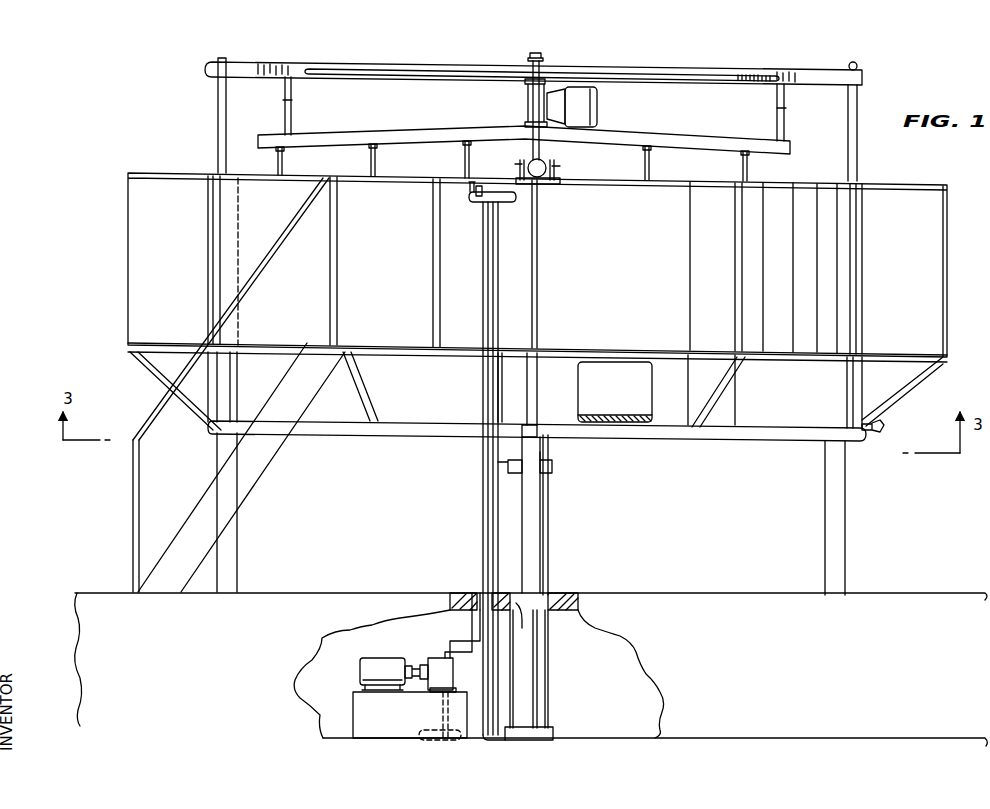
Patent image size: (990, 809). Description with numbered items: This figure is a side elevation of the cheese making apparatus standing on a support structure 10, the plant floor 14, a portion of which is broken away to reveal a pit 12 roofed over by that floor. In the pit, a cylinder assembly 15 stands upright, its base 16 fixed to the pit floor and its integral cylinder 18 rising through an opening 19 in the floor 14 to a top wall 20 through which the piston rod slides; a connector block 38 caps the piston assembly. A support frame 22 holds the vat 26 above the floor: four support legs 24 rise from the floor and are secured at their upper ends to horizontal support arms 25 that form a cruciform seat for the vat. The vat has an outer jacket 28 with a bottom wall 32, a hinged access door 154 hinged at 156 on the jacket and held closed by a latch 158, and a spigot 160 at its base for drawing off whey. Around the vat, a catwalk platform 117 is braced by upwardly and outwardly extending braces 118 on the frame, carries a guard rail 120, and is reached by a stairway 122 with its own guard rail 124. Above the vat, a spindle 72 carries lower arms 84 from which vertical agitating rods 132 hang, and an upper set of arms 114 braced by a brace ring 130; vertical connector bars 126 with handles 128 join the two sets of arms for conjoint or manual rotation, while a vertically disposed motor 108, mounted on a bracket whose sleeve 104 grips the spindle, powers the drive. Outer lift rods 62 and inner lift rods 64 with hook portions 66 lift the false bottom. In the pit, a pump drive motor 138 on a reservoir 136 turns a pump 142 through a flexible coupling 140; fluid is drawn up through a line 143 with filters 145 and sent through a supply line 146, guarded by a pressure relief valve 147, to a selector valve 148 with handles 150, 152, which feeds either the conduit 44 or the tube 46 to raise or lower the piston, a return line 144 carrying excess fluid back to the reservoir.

The support structure 10 is at (660, 662).
The pit 12 is at (595, 640).
The floor 14 is at (572, 592).
The cylinder assembly 15 is at (534, 662).
The base 16 is at (554, 728).
The cylinder 18 is at (548, 682).
The opening 19 is at (520, 628).
The top wall 20 is at (515, 482).
The support frame 22 is at (625, 442).
The support legs 24 is at (548, 530).
The support arms 25 is at (524, 426).
The vat 26 is at (740, 412).
The jacket 28 is at (862, 266).
The bottom wall 32 is at (752, 432).
The connector block 38 is at (554, 466).
The conduit 44 is at (500, 740).
The tube 46 is at (508, 468).
The outer lift rods 62 is at (218, 130).
The inner lift rods 64 is at (548, 184).
The hook portions 66 is at (540, 158).
The spindle 72 is at (538, 52).
The lower arms 84 is at (412, 132).
The sleeve 104 is at (530, 100).
The motor 108 is at (600, 102).
The upper arms 114 is at (275, 62).
The platform 117 is at (380, 345).
The braces 118 is at (362, 398).
The guard rail 120 is at (737, 275).
The stairway 122 is at (258, 470).
The guard rail 124 is at (133, 495).
The connector bars 126 is at (292, 110).
The handles 128 is at (284, 101).
The brace ring 130 is at (652, 70).
The agitating rods 132 is at (466, 162).
The reservoir 136 is at (355, 710).
The pump drive motor 138 is at (360, 672).
The flexible coupling 140 is at (416, 666).
The pump 142 is at (440, 690).
The line 143 is at (449, 692).
The return line 144 is at (452, 612).
The filters 145 is at (455, 742).
The supply line 146 is at (476, 640).
The pressure relief valve 147 is at (446, 645).
The selector valve 148 is at (486, 205).
The handle 150 is at (468, 196).
The handle 152 is at (476, 198).
The access door 154 is at (590, 365).
The hinge 156 is at (640, 421).
The latch 158 is at (616, 365).
The spigot 160 is at (872, 431).